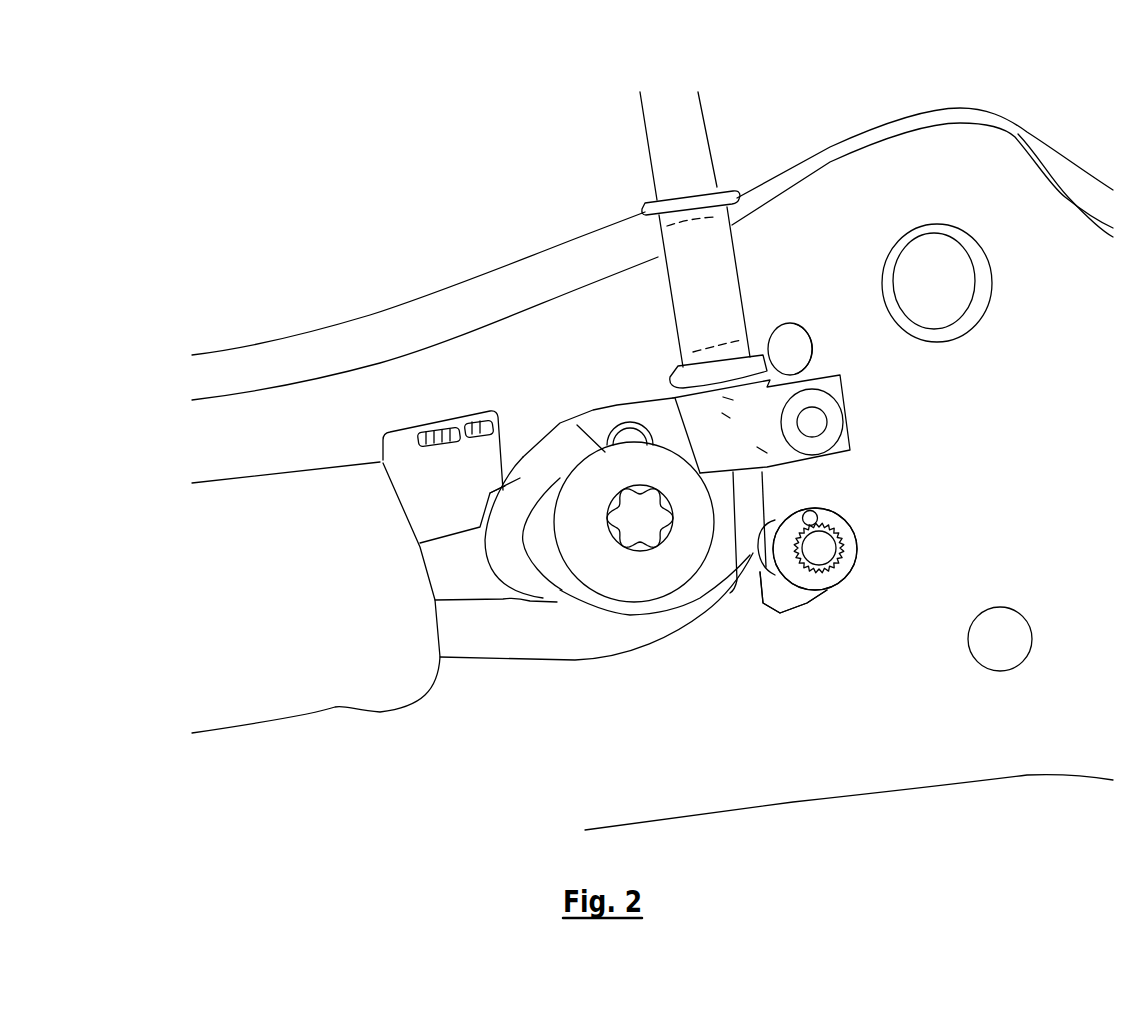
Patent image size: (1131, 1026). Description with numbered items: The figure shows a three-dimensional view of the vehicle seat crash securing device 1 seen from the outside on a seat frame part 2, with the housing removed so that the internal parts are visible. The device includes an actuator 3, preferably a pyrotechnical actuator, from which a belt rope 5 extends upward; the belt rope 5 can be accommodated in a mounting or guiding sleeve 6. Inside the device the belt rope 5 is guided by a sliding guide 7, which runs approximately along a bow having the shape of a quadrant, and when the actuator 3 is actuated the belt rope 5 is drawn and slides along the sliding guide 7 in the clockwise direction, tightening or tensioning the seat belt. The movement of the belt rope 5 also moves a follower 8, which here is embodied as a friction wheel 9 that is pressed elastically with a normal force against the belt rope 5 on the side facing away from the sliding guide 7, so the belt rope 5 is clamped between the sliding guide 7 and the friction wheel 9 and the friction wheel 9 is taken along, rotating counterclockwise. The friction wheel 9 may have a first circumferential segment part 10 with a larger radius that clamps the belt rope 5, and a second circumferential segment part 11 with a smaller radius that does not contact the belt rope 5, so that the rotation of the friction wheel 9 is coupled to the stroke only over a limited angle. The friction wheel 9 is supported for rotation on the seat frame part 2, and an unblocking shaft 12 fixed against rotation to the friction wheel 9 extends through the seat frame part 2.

The vehicle seat crash securing device 1 is at (601, 118).
The seat frame part 2 is at (626, 350).
The actuator 3 is at (296, 606).
The belt rope 5 is at (640, 647).
The mounting or guiding sleeve 6 is at (717, 188).
The sliding guide 7 is at (560, 590).
The follower 8 is at (797, 598).
The friction wheel 9 is at (808, 647).
The first circumferential segment part 10 is at (765, 608).
The second circumferential segment part 11 is at (780, 513).
The unblocking shaft 12 is at (823, 545).